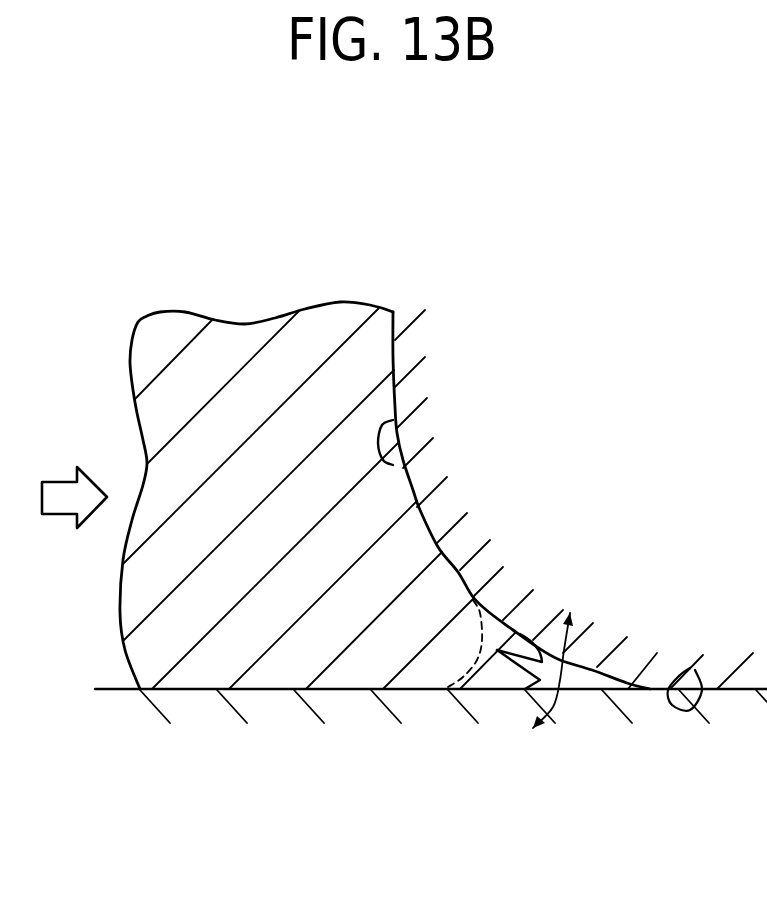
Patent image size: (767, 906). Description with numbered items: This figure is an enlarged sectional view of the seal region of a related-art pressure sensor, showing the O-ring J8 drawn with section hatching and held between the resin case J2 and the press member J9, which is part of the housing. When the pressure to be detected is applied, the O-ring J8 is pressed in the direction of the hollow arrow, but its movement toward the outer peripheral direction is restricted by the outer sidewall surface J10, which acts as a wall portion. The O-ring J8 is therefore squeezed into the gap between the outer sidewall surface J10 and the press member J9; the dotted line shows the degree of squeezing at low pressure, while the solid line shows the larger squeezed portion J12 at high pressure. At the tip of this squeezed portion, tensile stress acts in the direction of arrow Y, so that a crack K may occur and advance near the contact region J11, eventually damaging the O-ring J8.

The O-ring J8 is at (297, 345).
The resin case J2 is at (463, 390).
The outer sidewall surface J10 is at (397, 463).
The flap / peeled portion J12 is at (470, 587).
The contact point J11 is at (695, 670).
The press member J9 is at (352, 703).
The crack / notch K is at (512, 665).
The arrow Y is at (571, 681).